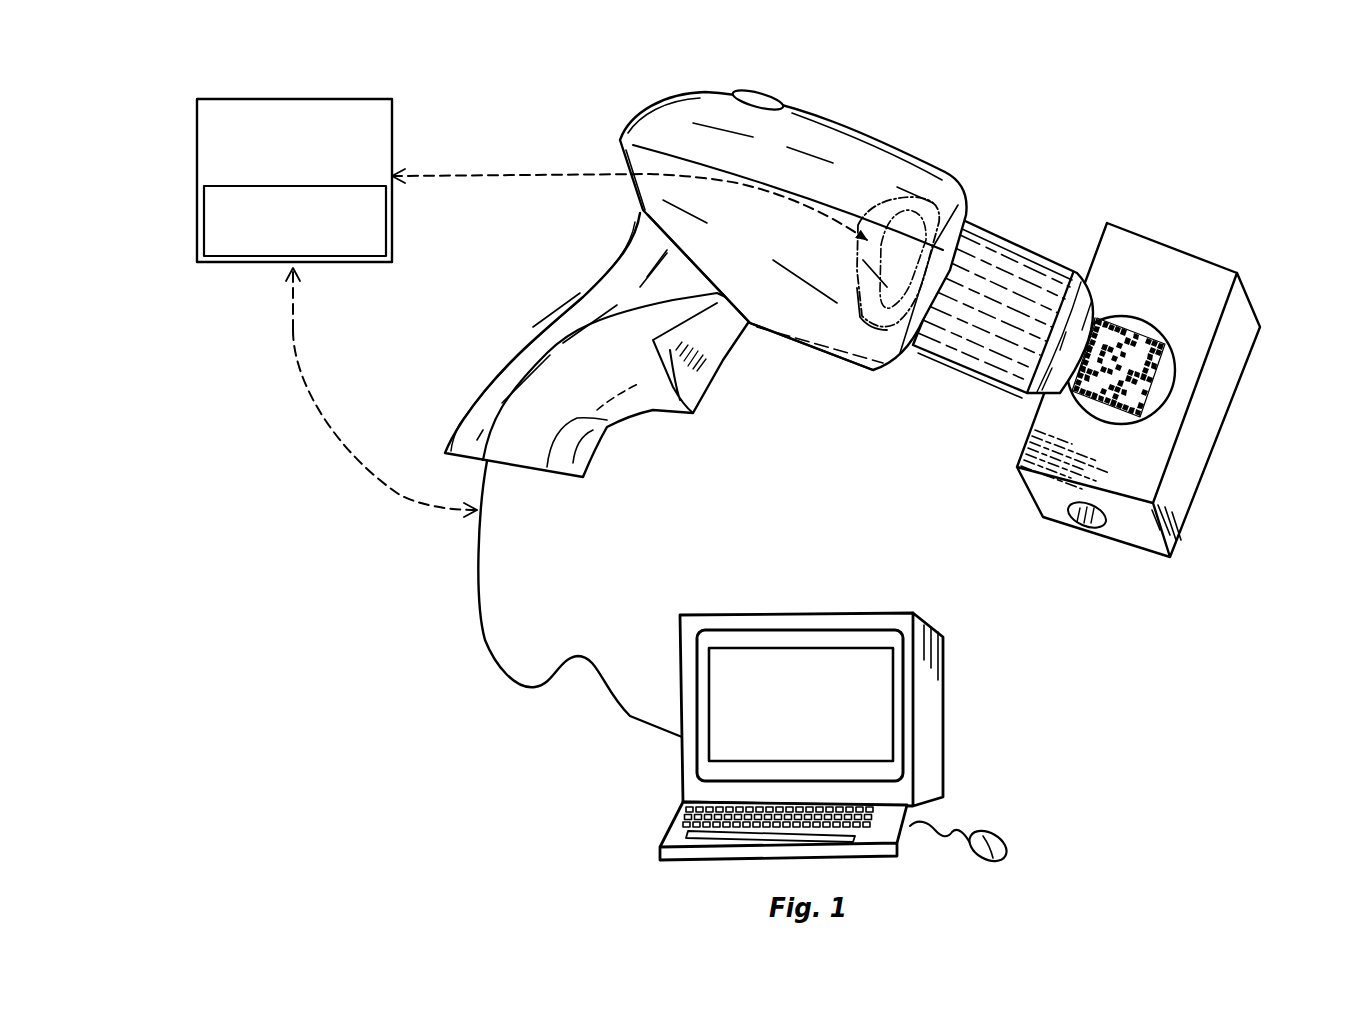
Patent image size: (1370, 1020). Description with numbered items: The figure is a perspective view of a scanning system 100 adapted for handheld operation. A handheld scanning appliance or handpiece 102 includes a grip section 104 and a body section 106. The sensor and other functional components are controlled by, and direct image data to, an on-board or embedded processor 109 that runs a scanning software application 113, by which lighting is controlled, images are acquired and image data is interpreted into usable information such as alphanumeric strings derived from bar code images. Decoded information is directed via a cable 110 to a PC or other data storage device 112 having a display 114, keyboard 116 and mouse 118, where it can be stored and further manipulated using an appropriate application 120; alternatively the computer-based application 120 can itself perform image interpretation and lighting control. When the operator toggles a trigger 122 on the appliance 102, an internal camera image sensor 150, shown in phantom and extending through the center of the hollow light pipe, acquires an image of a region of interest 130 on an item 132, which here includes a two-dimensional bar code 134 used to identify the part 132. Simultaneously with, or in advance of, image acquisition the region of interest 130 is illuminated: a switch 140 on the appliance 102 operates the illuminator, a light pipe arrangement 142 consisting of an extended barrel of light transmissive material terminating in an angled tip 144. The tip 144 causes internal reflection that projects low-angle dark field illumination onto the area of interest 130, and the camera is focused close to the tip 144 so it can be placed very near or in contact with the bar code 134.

The scanning system 100 is at (884, 302).
The handheld scanning appliance 102 is at (856, 118).
The grip section 104 is at (650, 423).
The body section 106 is at (822, 343).
The on-board/embedded processor 109 is at (343, 100).
The cable 110 is at (481, 549).
The data storage device 112 is at (882, 743).
The scanning software application 113 is at (204, 243).
The display 114 is at (885, 632).
The keyboard 116 is at (907, 850).
The mouse 118 is at (990, 833).
The application 120 is at (887, 697).
The trigger 122 is at (723, 367).
The region of interest 130 is at (1163, 313).
The item 132 is at (1203, 440).
The two-dimensional bar code 134 is at (1147, 335).
The switch 140 is at (770, 95).
The light pipe arrangement 142 is at (977, 380).
The angled tip 144 is at (1090, 282).
The camera sensor 150 is at (897, 363).